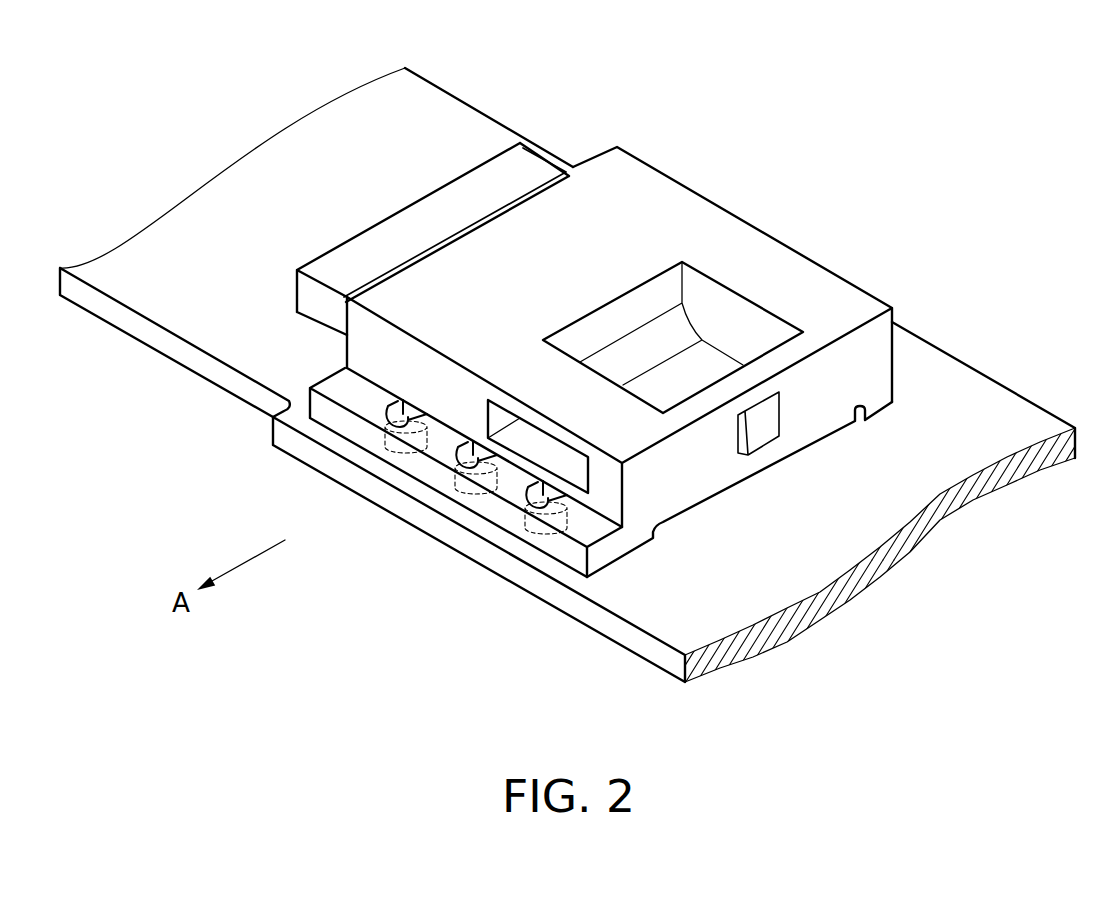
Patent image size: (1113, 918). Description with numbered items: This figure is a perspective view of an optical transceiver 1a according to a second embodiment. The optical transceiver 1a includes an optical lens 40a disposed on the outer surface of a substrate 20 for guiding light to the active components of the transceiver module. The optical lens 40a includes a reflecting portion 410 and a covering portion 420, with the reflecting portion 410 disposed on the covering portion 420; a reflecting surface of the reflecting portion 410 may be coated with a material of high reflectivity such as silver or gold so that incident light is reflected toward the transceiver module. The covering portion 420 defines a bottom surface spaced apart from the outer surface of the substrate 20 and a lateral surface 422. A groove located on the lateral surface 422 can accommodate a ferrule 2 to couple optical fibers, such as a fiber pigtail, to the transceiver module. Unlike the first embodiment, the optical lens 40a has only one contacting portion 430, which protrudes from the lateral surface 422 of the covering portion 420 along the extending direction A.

The optical transceiver 1a is at (994, 41).
The ferrule 2 is at (392, 198).
The substrate 20 is at (1023, 388).
The optical lens 40a is at (779, 156).
The reflecting portion 410 is at (712, 311).
The covering portion 420 is at (630, 220).
The lateral surface 422 is at (610, 488).
The contacting portion 430 is at (369, 385).